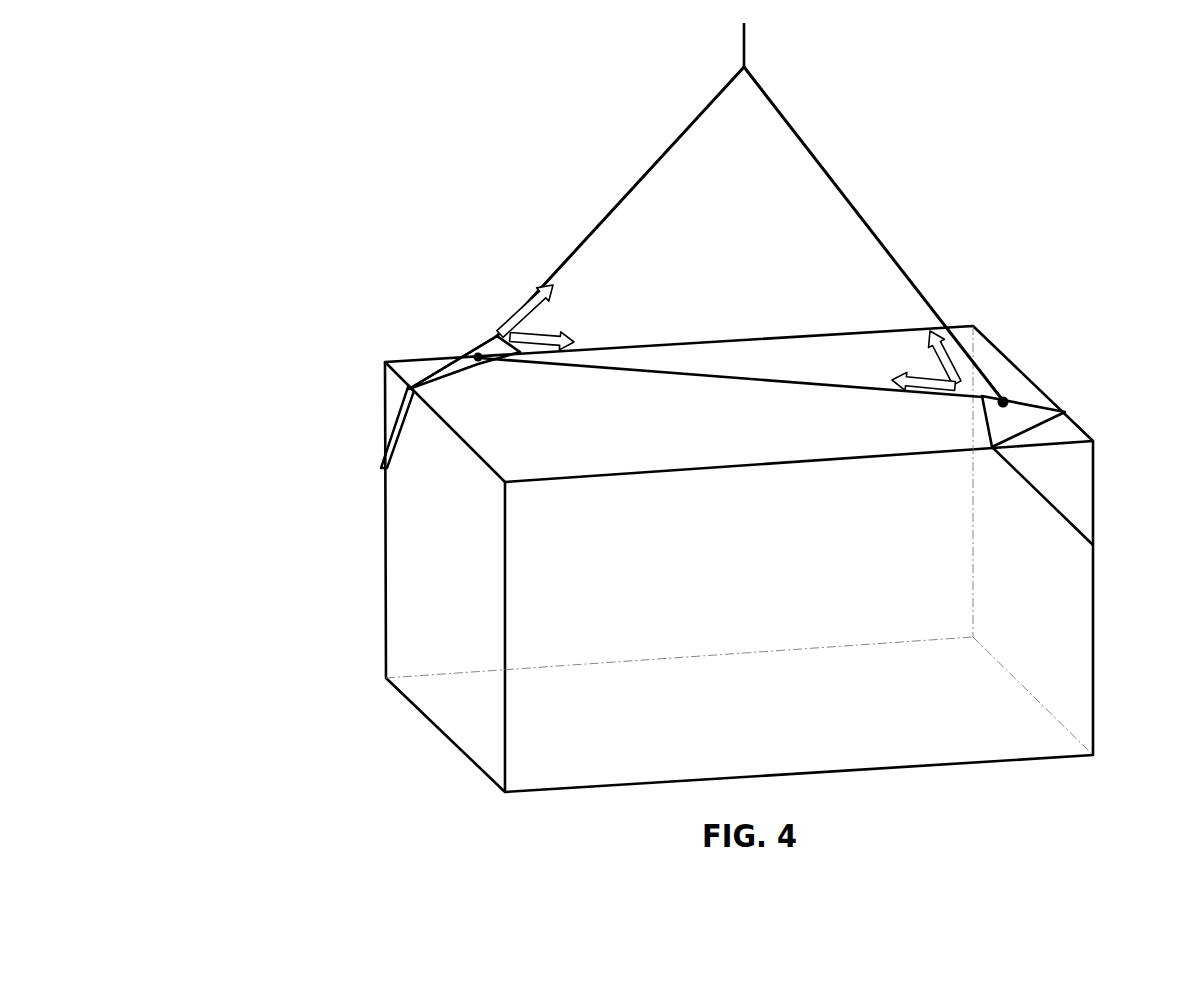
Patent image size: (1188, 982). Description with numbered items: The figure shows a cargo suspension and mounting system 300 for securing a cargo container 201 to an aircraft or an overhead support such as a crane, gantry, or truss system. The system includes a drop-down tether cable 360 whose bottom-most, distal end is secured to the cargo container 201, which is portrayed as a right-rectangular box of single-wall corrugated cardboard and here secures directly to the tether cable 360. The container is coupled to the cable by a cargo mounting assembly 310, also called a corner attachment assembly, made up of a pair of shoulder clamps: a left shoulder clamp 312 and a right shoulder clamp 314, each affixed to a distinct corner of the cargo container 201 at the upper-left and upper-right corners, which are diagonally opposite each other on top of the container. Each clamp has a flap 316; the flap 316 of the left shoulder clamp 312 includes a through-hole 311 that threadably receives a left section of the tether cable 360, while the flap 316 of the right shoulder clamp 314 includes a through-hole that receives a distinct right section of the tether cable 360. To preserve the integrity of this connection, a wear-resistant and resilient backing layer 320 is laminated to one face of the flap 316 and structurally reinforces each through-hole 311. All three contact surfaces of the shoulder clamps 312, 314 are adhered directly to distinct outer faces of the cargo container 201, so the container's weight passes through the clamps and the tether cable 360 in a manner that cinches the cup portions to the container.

The cargo container 201 is at (385, 533).
The cargo suspension and mounting system 300 is at (352, 95).
The cargo mounting assembly 310 is at (388, 300).
The through-hole 311 is at (482, 360).
The left shoulder clamp 312 is at (405, 375).
The right shoulder clamp 314 is at (1075, 433).
The flap 316 is at (470, 343).
The backing layer 320 is at (452, 367).
The tether cable 360 is at (743, 37).